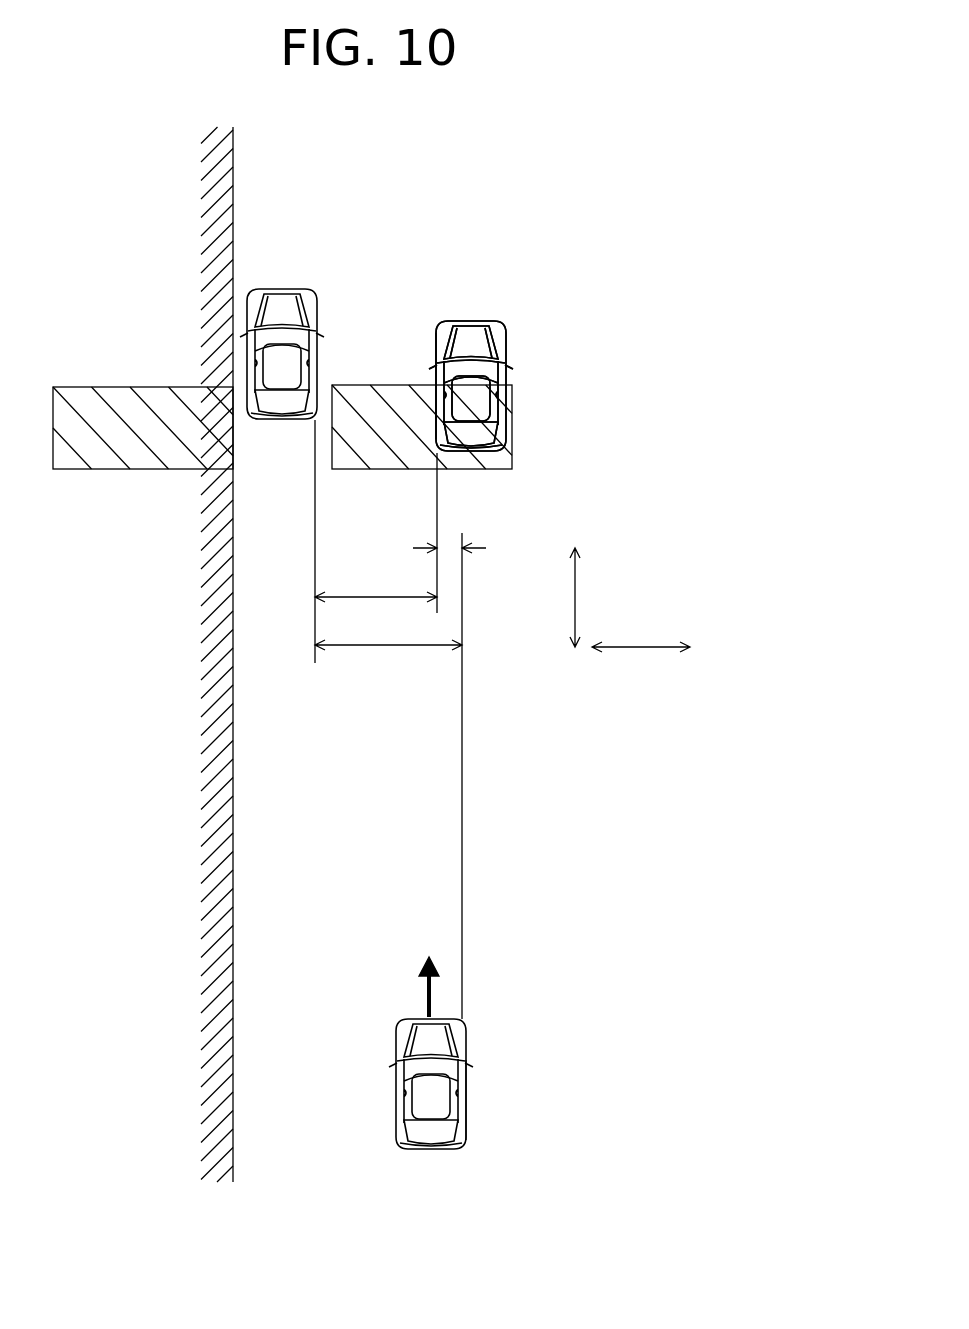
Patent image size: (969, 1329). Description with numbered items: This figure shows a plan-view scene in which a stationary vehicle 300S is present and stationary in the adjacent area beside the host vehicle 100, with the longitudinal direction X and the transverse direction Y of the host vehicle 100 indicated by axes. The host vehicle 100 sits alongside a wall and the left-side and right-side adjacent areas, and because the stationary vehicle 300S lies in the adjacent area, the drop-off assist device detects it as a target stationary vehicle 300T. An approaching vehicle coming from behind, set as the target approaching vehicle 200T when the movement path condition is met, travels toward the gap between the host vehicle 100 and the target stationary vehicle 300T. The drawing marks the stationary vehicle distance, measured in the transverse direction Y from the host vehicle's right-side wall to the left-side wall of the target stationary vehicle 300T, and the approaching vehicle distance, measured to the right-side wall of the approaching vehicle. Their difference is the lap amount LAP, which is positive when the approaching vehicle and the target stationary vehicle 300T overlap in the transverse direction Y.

The host vehicle 100 is at (283, 288).
The stationary vehicle 300S is at (468, 320).
The target stationary vehicle 300T is at (511, 362).
The target approaching vehicle 200T is at (429, 1150).
The lap amount LAP is at (452, 548).
The longitudinal direction X is at (574, 597).
The transverse direction Y is at (640, 648).